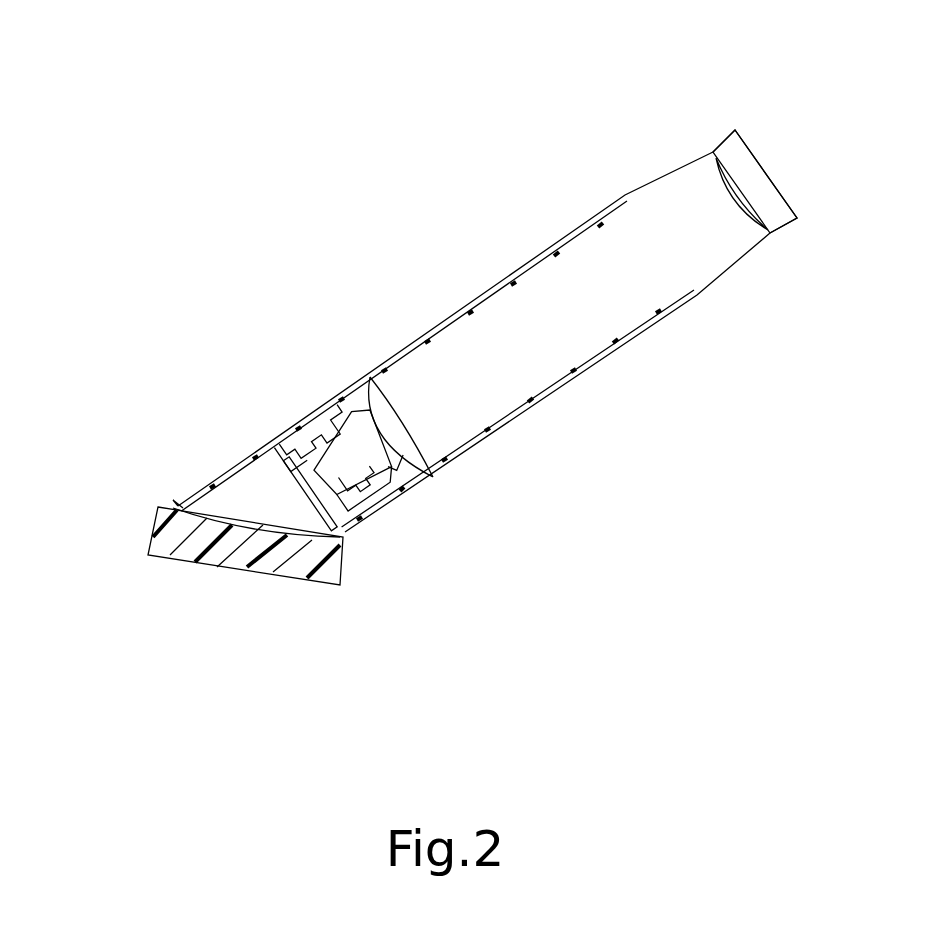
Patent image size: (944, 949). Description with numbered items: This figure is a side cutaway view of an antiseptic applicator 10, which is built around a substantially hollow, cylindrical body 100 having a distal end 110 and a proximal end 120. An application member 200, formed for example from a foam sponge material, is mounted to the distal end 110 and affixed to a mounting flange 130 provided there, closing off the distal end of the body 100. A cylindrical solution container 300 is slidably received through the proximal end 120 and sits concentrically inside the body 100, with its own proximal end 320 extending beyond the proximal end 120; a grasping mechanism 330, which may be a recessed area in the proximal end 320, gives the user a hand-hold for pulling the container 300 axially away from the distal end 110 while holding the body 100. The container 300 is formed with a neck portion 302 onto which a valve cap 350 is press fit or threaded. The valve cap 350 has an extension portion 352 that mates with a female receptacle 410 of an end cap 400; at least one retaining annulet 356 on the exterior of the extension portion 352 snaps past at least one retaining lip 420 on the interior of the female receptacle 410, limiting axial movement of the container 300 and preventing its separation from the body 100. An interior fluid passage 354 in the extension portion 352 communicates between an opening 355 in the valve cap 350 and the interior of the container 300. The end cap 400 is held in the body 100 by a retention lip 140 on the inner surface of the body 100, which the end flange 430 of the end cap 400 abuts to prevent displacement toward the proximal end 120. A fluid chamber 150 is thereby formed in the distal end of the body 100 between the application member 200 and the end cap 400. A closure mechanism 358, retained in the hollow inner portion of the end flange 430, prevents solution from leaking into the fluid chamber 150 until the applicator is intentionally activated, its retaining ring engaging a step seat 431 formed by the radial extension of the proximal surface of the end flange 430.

The antiseptic applicator 10 is at (224, 128).
The body 100 is at (595, 383).
The distal end 110 is at (230, 525).
The proximal end 120 is at (697, 295).
The mounting flange 130 is at (175, 505).
The retention lip 140 is at (283, 453).
The fluid chamber 150 is at (243, 490).
The application member 200 is at (145, 532).
The solution container 300 is at (670, 197).
The neck portion 302 is at (393, 445).
The proximal end 320 is at (736, 127).
The grasping mechanism 330 is at (768, 181).
The valve cap 350 is at (412, 471).
The extension portion 352 is at (345, 433).
The interior fluid passage 354 is at (373, 440).
The opening 355 is at (322, 520).
The retaining annulet 356 is at (395, 505).
The closure mechanism 358 is at (285, 462).
The end cap 400 is at (294, 507).
The female receptacle 410 is at (413, 500).
The retaining lip 420 is at (305, 455).
The end flange 430 is at (324, 492).
The step seat 431 is at (336, 503).